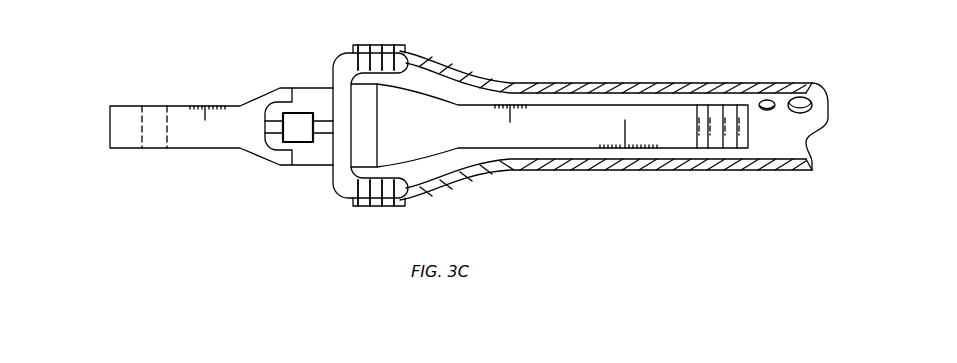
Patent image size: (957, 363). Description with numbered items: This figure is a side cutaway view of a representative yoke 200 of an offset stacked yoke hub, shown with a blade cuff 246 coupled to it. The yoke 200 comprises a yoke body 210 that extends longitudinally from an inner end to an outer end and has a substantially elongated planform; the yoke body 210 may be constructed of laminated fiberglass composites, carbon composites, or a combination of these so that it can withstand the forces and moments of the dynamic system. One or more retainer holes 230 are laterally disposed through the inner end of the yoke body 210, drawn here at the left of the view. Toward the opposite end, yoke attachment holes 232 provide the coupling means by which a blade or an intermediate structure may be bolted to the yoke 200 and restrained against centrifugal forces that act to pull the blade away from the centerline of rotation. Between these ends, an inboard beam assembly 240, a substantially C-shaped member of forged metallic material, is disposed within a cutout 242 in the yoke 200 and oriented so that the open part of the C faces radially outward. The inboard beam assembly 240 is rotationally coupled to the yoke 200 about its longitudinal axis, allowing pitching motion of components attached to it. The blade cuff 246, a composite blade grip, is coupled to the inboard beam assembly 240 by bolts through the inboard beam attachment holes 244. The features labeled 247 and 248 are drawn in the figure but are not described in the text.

The yoke 200 is at (204, 226).
The yoke body 210 is at (465, 137).
The retainer holes 230 is at (162, 110).
The yoke attachment holes 232 is at (697, 108).
The inboard beam assembly 240 is at (336, 72).
The cutout 242 is at (317, 160).
The inboard beam attachment holes 244 is at (368, 46).
The blade cuff 246 is at (742, 170).
The tooth row 247 is at (354, 46).
The coupling block 248 is at (292, 136).